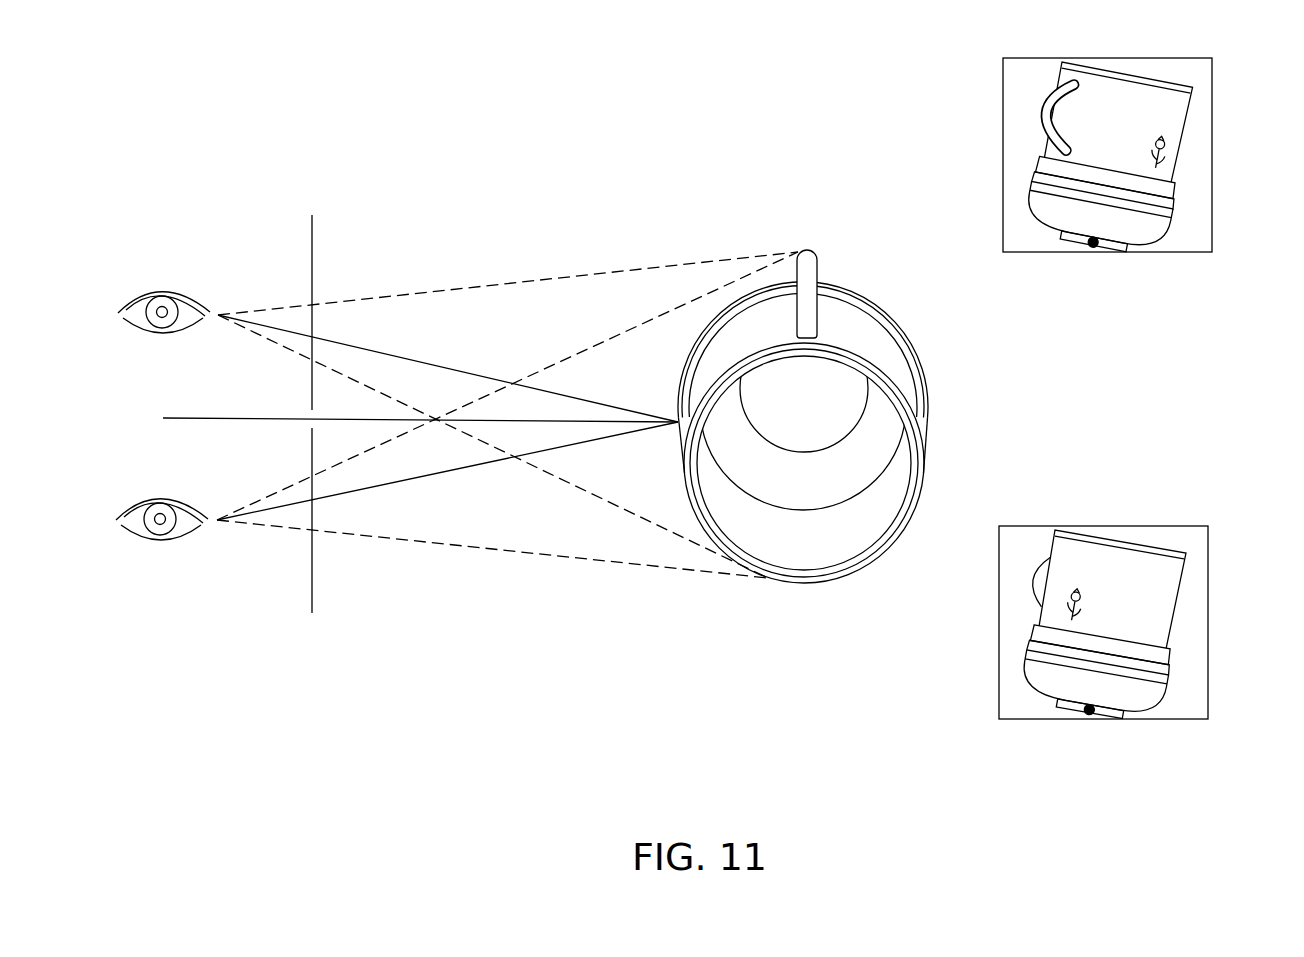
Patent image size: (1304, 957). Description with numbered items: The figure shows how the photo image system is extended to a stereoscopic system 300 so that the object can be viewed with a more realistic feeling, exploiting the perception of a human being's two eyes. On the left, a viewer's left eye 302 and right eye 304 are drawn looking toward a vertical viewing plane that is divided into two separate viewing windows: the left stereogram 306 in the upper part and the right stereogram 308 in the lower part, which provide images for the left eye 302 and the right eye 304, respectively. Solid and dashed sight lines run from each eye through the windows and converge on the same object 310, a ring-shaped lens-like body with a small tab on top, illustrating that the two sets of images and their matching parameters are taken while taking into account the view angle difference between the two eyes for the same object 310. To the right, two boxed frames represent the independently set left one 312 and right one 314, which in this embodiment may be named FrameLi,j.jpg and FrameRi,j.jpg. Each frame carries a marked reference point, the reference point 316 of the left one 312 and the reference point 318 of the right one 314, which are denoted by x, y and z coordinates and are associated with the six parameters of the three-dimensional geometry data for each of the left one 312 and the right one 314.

The stereoscopic system 300 is at (192, 151).
The left eye 302 is at (163, 290).
The right eye 304 is at (162, 497).
The left stereogram 306 is at (314, 265).
The right stereogram 308 is at (314, 567).
The object 310 is at (929, 418).
The left one 312 is at (1212, 100).
The right one 314 is at (1208, 568).
The reference point 316 is at (1095, 243).
The reference point 318 is at (1090, 710).